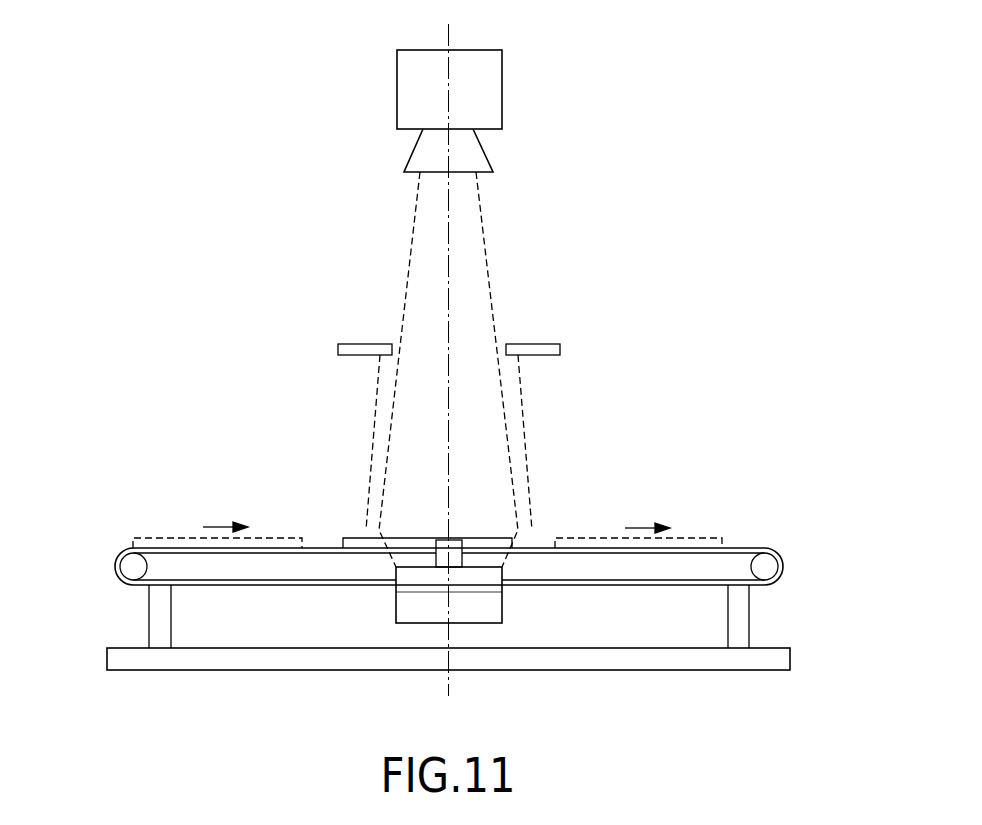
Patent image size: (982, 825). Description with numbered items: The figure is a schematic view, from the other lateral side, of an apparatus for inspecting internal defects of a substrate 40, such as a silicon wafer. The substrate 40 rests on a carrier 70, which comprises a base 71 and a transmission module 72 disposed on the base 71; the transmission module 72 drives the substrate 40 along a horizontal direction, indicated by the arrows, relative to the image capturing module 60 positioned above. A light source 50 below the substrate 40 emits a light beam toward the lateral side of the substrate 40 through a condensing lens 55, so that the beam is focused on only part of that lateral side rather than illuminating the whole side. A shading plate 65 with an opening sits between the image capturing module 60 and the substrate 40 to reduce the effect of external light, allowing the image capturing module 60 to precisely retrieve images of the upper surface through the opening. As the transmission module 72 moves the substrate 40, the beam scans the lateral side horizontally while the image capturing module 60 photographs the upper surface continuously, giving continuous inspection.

The substrate 40 is at (473, 543).
The light source 50 is at (400, 602).
The condensing lens 55 is at (444, 545).
The image capturing module 60 is at (497, 90).
The shading plate 65 is at (531, 349).
The carrier 70 is at (63, 577).
The base 71 is at (157, 619).
The transmission module 72 is at (121, 557).